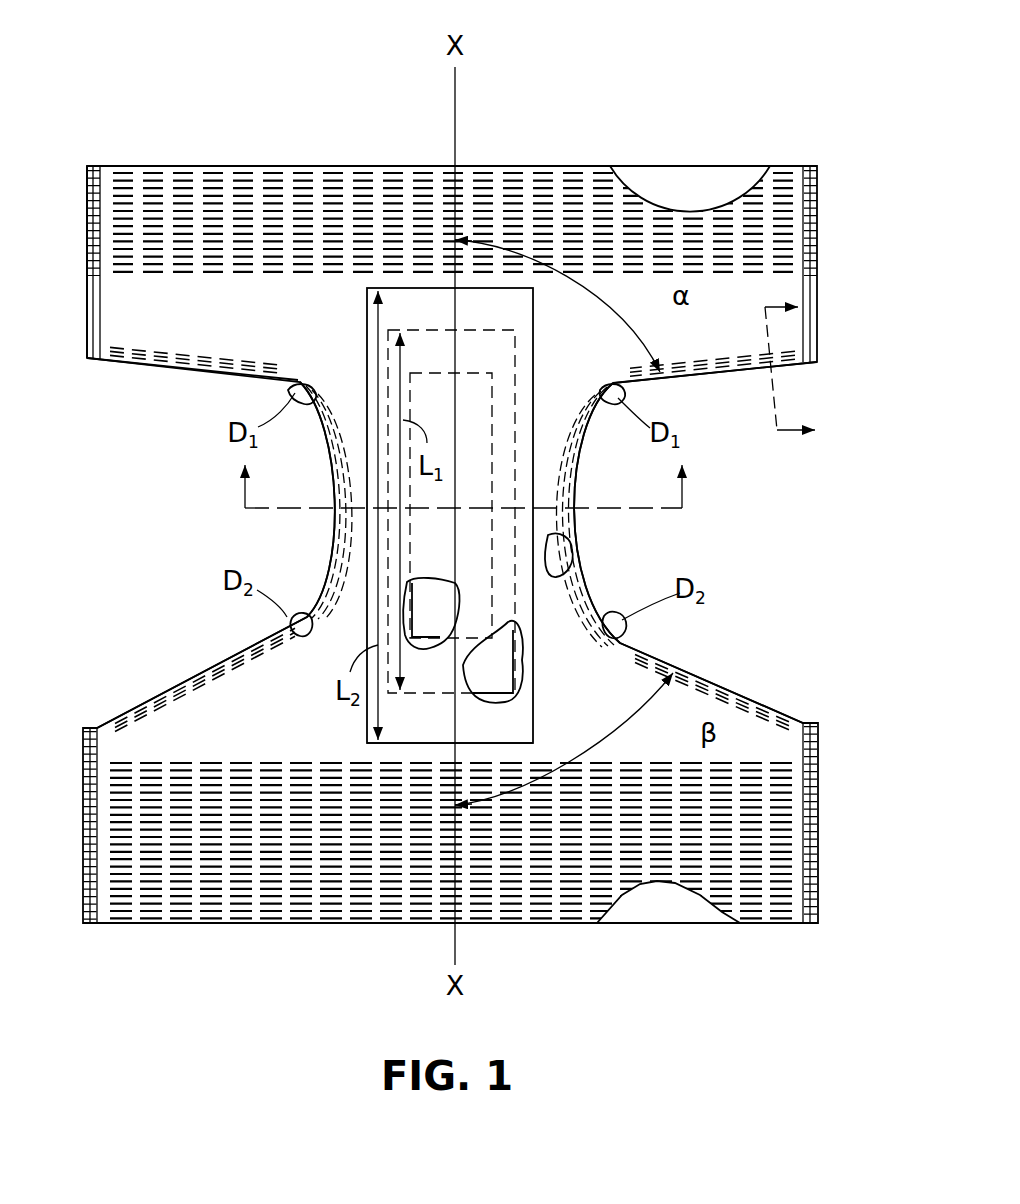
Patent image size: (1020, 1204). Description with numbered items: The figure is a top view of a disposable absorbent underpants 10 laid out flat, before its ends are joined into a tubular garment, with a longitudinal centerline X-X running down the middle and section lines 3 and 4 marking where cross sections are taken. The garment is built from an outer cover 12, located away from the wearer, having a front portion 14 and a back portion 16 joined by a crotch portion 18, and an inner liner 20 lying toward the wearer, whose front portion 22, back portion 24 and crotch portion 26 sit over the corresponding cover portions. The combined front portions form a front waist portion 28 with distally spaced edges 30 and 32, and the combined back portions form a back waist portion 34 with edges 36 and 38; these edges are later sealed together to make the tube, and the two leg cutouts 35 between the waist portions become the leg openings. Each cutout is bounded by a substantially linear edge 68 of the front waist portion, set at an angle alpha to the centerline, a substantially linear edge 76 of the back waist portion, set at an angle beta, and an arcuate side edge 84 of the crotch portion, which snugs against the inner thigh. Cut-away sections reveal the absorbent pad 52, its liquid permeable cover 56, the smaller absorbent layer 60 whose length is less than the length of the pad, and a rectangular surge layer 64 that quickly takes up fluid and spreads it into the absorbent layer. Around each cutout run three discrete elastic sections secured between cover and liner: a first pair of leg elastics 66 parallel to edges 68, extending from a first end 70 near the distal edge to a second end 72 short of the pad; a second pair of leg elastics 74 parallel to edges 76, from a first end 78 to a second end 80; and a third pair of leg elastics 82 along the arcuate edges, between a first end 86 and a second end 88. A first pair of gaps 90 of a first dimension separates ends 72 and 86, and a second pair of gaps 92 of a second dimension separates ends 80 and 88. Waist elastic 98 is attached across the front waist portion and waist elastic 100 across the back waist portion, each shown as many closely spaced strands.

The disposable absorbent underpants 10 is at (599, 78).
The outer cover 12 is at (718, 162).
The front portion 14 is at (663, 180).
The back portion 16 is at (678, 910).
The crotch portion 18 is at (568, 552).
The inner liner 20 is at (483, 174).
The front portion 22 is at (560, 172).
The back portion 24 is at (546, 913).
The crotch portion 26 is at (330, 540).
The front waist portion 28 is at (140, 178).
The edge 30 is at (88, 264).
The edge 32 is at (823, 258).
The back waist portion 34 is at (205, 906).
The leg cutout 35 is at (178, 537).
The edge 36 is at (86, 850).
The edge 38 is at (820, 845).
The absorbent pad 52 is at (518, 710).
The liquid permeable cover 56 is at (396, 740).
The absorbent layer 60 is at (471, 683).
The surge layer 64 is at (420, 623).
The first pair of leg elastics 66 is at (208, 372).
The first pair of edges 68 is at (150, 368).
The first end 70 is at (104, 372).
The second end 72 is at (292, 384).
The second pair of leg elastics 74 is at (252, 672).
The second pair of edges 76 is at (172, 706).
The first end 78 is at (110, 723).
The second end 80 is at (288, 637).
The third pair of leg elastics 82 is at (344, 440).
The arcuate side edges 84 is at (333, 457).
The first end 86 is at (317, 400).
The second end 88 is at (308, 624).
The first pair of gaps 90 is at (312, 380).
The second pair of gaps 92 is at (309, 640).
The waist elastic 98 is at (273, 166).
The waist elastic 100 is at (300, 923).
The section line 3- 3 is at (462, 497).
The section line 4- 4 is at (781, 369).